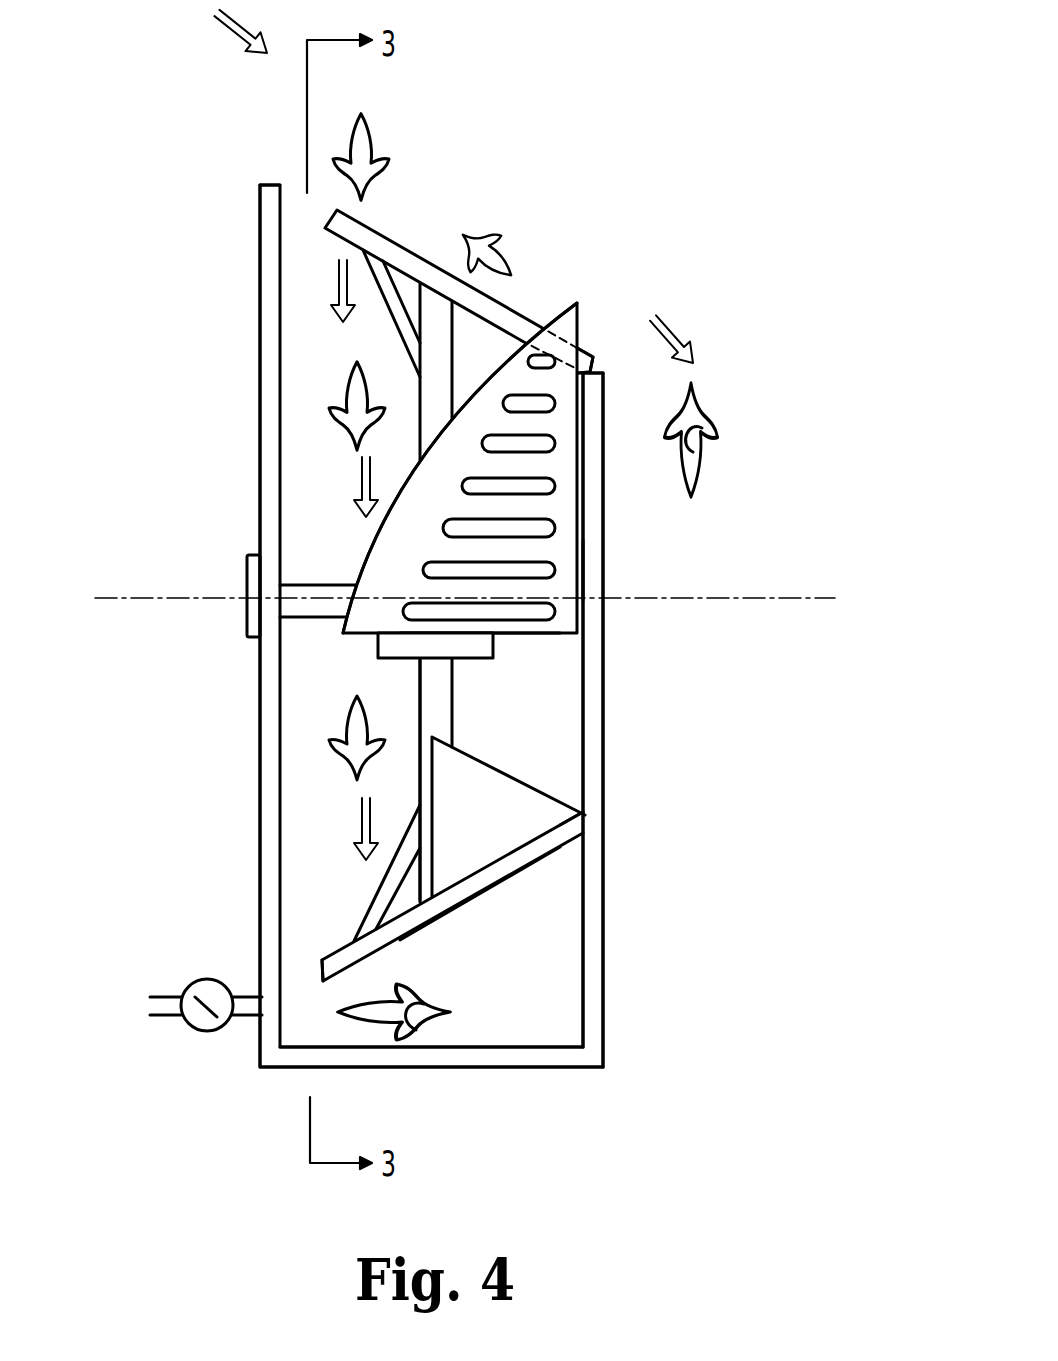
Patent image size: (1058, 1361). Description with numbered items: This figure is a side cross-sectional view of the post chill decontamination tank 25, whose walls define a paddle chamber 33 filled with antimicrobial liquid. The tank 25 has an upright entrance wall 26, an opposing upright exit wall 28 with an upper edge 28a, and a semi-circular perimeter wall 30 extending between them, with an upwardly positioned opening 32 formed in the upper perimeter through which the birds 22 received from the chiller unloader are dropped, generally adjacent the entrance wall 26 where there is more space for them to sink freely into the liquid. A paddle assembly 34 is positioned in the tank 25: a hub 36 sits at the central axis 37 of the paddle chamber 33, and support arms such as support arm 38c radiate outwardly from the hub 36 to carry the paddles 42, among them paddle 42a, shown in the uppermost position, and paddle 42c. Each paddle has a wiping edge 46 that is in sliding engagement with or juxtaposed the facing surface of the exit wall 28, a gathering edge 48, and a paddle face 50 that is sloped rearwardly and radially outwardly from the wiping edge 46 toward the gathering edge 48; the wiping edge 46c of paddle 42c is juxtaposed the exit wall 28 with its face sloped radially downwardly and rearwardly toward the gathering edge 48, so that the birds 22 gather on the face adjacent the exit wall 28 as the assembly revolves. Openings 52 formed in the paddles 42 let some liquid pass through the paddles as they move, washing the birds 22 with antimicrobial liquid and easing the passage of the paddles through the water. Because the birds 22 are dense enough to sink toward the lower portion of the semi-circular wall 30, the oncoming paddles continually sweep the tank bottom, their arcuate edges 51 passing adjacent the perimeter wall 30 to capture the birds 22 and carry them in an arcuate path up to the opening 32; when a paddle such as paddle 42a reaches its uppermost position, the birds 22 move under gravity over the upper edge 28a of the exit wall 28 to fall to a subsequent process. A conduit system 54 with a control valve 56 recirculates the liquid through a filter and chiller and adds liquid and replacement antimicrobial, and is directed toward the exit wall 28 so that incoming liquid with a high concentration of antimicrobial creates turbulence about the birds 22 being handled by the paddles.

The birds 22 is at (385, 150).
The tank 25 is at (254, 298).
The upright entrance wall 26 is at (267, 848).
The upright exit wall 28 is at (597, 757).
The upper edge of the upright exit wall 28a is at (605, 371).
The semi-circular perimeter wall 30 is at (540, 1065).
The upwardly positioned opening 32 is at (298, 193).
The paddle chamber 33 is at (545, 1022).
The paddle assembly 34 is at (412, 685).
The hub 36 is at (470, 648).
The central axis 37 is at (795, 598).
The support arm 38c is at (445, 712).
The paddles 42 is at (565, 542).
The paddle 42a is at (413, 253).
The paddle 42c is at (443, 905).
The wiping edge 46 is at (597, 565).
The wiping edge 46c is at (583, 818).
The gathering edge 48 is at (505, 360).
The paddle face 50 is at (547, 467).
The arcuate edge 51 is at (368, 558).
The openings 52 is at (553, 612).
The conduit system 54 is at (160, 1018).
The control valve 56 is at (200, 1030).